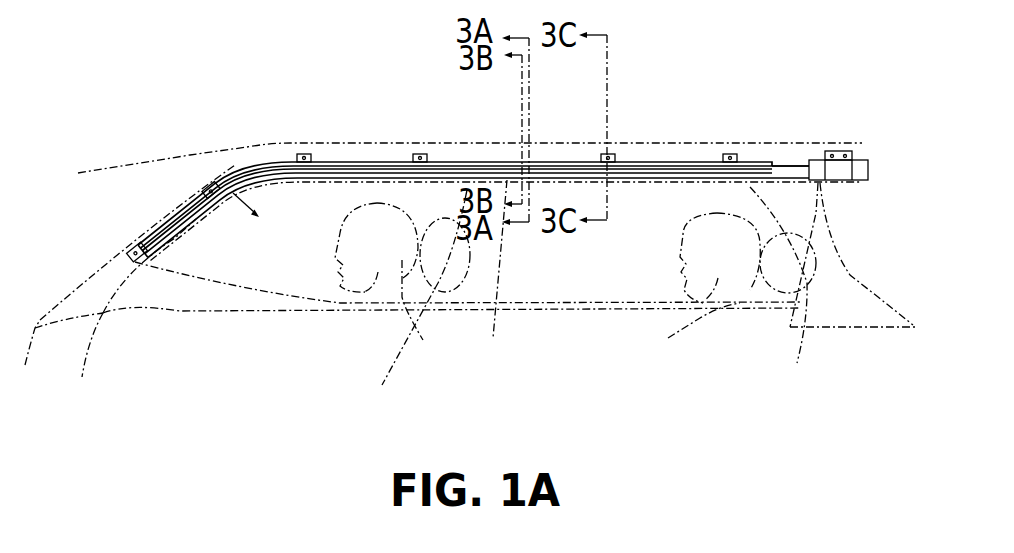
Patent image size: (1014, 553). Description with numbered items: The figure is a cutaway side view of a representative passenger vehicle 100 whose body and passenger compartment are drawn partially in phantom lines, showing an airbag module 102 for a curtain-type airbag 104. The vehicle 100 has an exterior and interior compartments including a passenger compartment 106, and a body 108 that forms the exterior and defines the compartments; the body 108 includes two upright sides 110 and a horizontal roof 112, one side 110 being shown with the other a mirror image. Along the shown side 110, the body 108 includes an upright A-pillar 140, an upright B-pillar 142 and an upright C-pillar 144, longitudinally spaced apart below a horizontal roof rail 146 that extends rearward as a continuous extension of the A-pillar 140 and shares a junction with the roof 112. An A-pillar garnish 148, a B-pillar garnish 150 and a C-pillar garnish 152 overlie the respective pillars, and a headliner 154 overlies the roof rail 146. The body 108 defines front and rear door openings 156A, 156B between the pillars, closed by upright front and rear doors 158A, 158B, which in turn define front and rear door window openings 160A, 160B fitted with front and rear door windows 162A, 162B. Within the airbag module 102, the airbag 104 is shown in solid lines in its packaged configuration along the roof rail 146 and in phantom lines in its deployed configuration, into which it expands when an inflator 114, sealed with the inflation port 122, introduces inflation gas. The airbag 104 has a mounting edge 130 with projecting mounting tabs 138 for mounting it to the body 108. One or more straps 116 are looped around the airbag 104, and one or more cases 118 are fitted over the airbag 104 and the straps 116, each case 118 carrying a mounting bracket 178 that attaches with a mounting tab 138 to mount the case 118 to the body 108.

The passenger vehicle 100 is at (144, 150).
The airbag module 102 is at (490, 150).
The curtain-type airbag 104 is at (360, 134).
The passenger compartment 106 is at (228, 187).
The body 108 is at (143, 230).
The side 110 is at (129, 242).
The roof 112 is at (247, 147).
The inflator 114 is at (859, 151).
The strap 116 is at (536, 182).
The case 118 is at (712, 162).
The inflation port 122 is at (781, 164).
The mounting edge 130 is at (445, 180).
The mounting tab 138 is at (659, 138).
The mounting bracket 178 is at (610, 155).
The A-pillar 140 is at (202, 224).
The A-pillar garnish 148 is at (207, 214).
The B-pillar 142 is at (556, 258).
The B-pillar garnish 150 is at (502, 265).
The C-pillar 144 is at (865, 255).
The C-pillar garnish 152 is at (845, 266).
The roof rail 146 is at (336, 138).
The headliner 154 is at (346, 160).
The front door opening 156A is at (283, 340).
The rear door opening 156B is at (616, 340).
The front door 158A is at (340, 318).
The rear door 158B is at (577, 350).
The front door window opening 160A is at (334, 250).
The rear door window opening 160B is at (671, 258).
The front door window 162A is at (245, 296).
The rear door window 162B is at (577, 296).